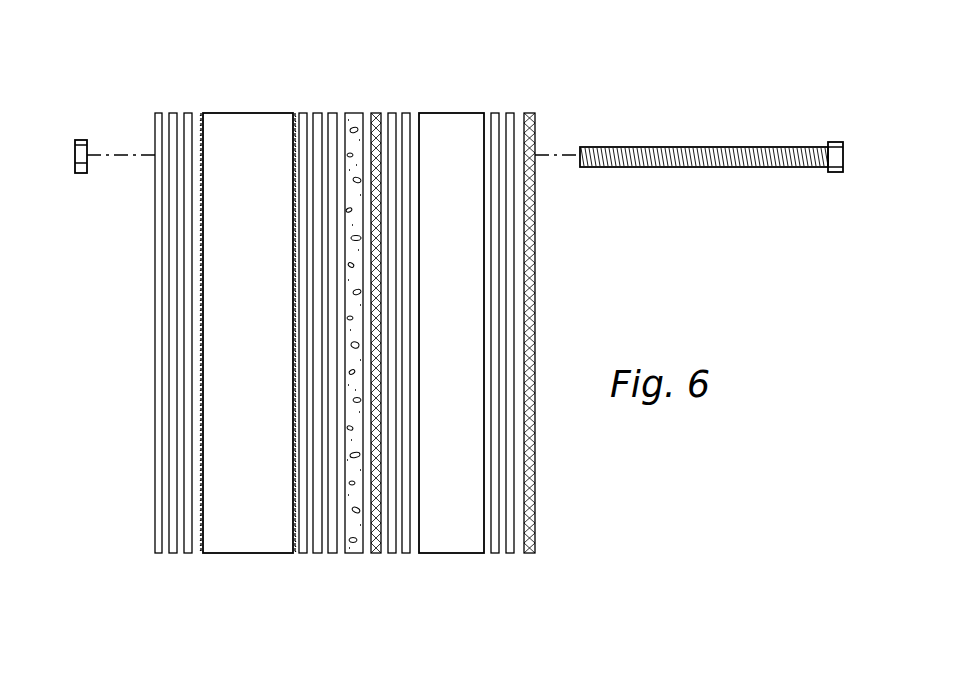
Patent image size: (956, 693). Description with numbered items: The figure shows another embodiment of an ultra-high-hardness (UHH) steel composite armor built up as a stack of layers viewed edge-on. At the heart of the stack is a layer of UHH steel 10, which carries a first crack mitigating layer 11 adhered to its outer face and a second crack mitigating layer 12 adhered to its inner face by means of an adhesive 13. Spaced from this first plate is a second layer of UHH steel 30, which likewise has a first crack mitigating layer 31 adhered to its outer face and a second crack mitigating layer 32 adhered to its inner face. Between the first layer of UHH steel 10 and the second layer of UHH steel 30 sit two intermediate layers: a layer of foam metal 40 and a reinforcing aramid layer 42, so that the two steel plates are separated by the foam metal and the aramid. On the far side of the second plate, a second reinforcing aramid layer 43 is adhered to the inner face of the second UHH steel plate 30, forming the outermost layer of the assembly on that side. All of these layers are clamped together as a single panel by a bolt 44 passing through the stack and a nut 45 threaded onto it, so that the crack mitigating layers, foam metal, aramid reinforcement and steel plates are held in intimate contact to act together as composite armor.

The layer of UHH steel 10 is at (240, 553).
The first crack mitigating layer 11 is at (202, 566).
The second crack mitigating layer 12 is at (296, 566).
The adhesive 13 is at (202, 317).
The second layer of UHH steel 30 is at (449, 113).
The first crack mitigating layer 31 is at (413, 108).
The second crack mitigating layer 32 is at (514, 108).
The layer of foam metal 40 is at (363, 553).
The reinforcing aramid layer 42 is at (375, 553).
The second reinforcing aramid layer 43 is at (528, 553).
The bolt 44 is at (667, 167).
The nut 45 is at (81, 173).